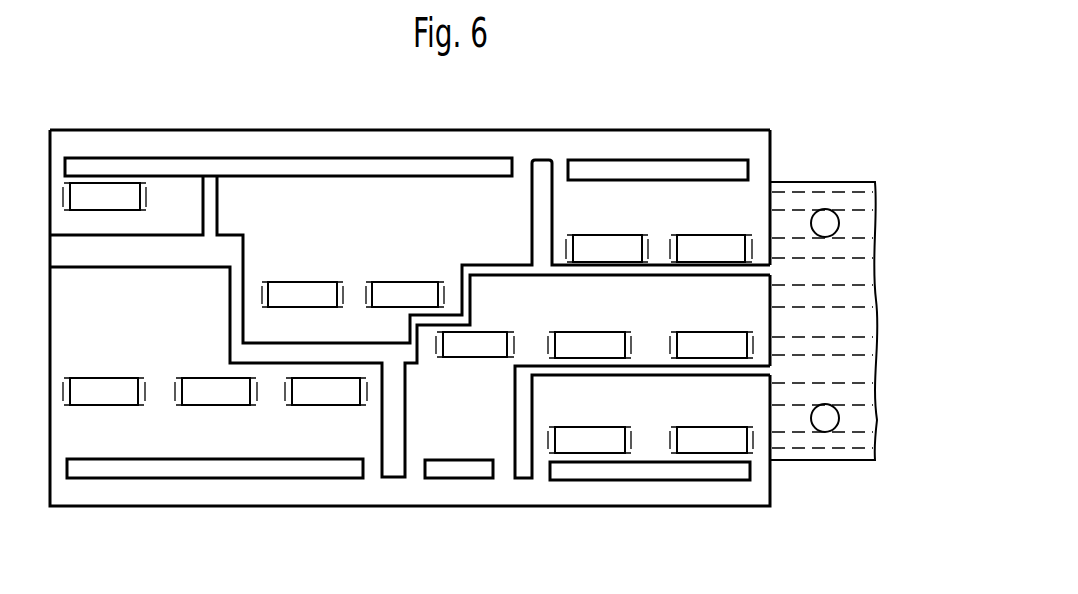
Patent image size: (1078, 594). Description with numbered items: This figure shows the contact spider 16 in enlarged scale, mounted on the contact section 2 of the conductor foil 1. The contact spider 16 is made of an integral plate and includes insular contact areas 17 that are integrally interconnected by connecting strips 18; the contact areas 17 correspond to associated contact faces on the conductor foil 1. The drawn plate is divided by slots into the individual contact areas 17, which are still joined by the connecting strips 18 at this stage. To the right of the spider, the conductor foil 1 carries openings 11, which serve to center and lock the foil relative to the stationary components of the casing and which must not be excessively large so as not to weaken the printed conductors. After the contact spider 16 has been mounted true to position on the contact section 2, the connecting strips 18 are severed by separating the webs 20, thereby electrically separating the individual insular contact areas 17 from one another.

The conductor foil 1 is at (784, 212).
The contact section 2 is at (434, 116).
The openings 11 is at (824, 216).
The contact spider 16 is at (113, 128).
The contact areas 17 is at (212, 427).
The connecting strips 18 is at (290, 150).
The webs 20 is at (520, 165).